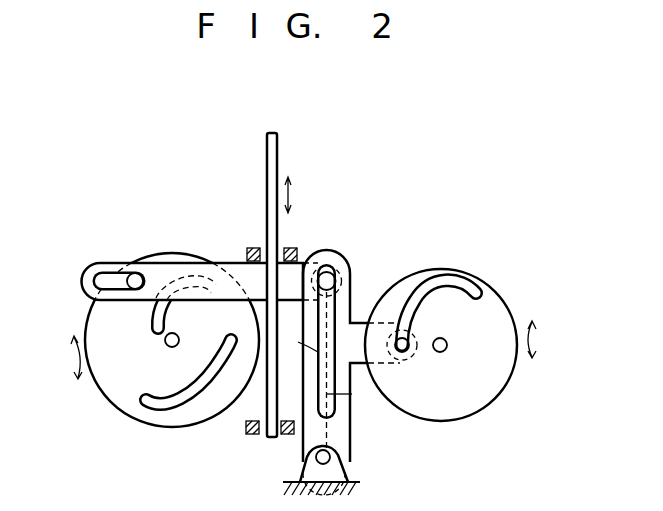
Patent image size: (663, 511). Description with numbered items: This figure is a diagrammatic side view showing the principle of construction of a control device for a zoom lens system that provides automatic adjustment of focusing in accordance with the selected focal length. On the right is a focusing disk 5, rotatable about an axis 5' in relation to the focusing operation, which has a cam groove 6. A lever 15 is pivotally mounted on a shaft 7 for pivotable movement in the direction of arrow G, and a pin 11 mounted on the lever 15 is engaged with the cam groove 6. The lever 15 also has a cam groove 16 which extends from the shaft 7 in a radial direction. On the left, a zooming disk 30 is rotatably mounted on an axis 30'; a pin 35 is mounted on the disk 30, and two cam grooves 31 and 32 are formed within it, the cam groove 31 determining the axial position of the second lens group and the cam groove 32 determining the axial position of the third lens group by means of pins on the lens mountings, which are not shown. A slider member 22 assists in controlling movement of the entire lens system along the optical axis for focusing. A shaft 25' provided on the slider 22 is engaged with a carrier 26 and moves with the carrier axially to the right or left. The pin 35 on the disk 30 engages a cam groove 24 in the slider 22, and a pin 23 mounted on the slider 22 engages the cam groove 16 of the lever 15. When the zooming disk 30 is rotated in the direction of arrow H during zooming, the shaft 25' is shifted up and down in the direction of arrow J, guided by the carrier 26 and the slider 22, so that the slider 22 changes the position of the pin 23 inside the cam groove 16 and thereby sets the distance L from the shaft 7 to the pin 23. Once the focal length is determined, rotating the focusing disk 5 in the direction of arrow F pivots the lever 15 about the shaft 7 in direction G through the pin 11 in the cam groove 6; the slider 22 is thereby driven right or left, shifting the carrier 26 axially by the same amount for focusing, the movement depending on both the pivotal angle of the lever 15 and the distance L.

The focusing disk 5 is at (441, 345).
The axis 5' is at (456, 357).
The cam groove 6 is at (470, 296).
The shaft 7 is at (337, 460).
The pin 11 is at (403, 353).
The lever 15 is at (340, 432).
The cam groove 16 is at (333, 317).
The slider member 22 is at (238, 262).
The pin 23 is at (336, 276).
The cam groove 24 is at (124, 288).
The shaft 25' is at (277, 297).
The carrier 26 is at (291, 249).
The zooming disk 30 is at (172, 351).
The axis 30' is at (163, 361).
The cam groove 31 is at (156, 331).
The cam groove 32 is at (212, 386).
The pin 35 is at (135, 273).
The arrow F is at (539, 339).
The arrow G is at (300, 340).
The arrow H is at (75, 362).
The arrow J is at (290, 193).
The distance L is at (346, 395).